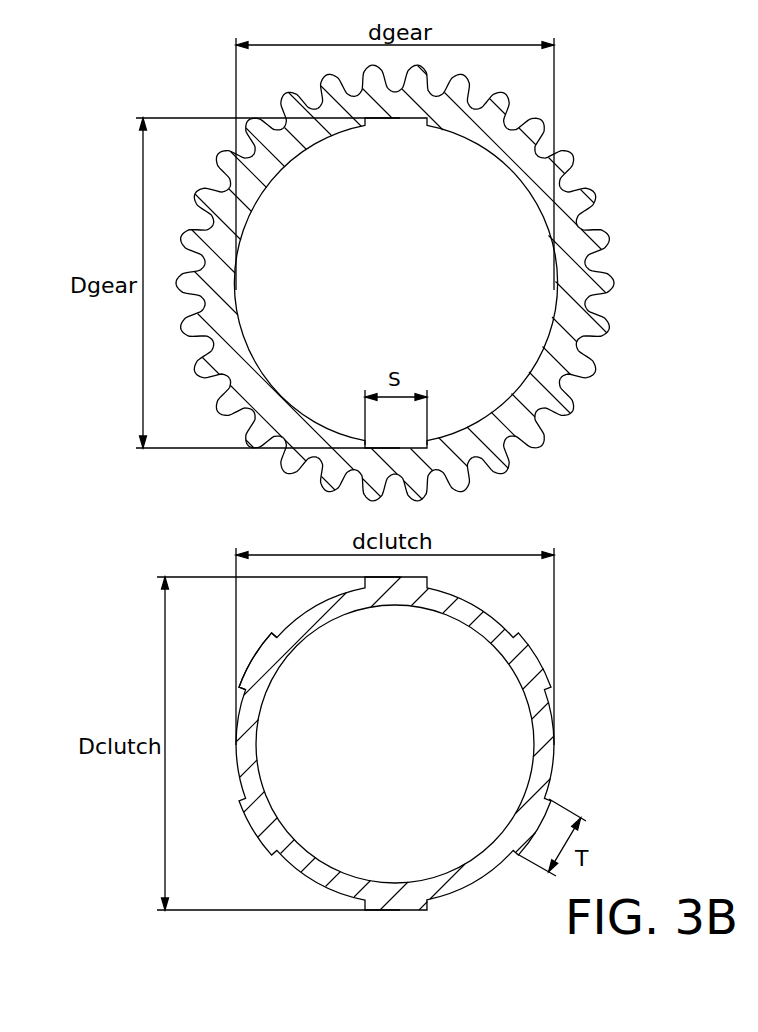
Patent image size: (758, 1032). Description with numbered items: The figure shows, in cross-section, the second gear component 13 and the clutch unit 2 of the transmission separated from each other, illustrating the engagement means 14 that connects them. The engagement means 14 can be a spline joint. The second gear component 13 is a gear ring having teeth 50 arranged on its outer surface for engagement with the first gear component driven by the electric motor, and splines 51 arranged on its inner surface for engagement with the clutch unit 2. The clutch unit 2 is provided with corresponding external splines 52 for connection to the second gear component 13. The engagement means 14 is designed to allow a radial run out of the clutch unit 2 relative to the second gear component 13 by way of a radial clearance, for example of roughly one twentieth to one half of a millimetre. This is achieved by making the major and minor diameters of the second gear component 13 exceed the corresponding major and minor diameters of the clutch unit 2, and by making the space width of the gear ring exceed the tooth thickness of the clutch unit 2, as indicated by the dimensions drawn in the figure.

The clutch unit 2 is at (540, 772).
The second gear component 13 is at (432, 283).
The engagement means 14 is at (393, 513).
The teeth 50 is at (605, 288).
The splines 51 is at (578, 330).
The external splines 52 is at (243, 663).